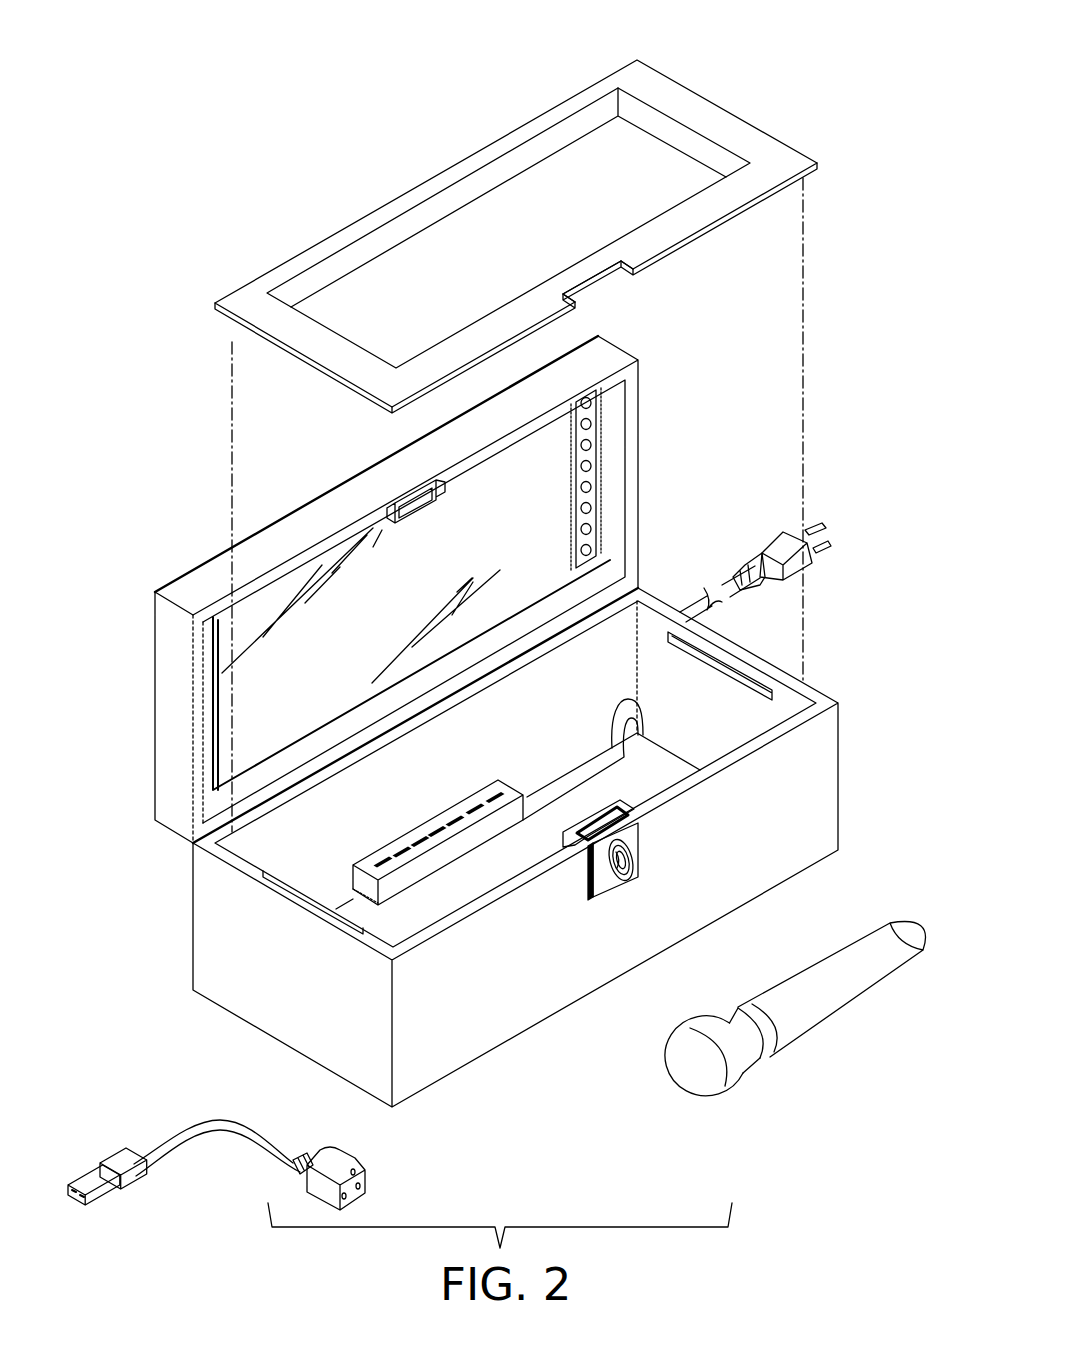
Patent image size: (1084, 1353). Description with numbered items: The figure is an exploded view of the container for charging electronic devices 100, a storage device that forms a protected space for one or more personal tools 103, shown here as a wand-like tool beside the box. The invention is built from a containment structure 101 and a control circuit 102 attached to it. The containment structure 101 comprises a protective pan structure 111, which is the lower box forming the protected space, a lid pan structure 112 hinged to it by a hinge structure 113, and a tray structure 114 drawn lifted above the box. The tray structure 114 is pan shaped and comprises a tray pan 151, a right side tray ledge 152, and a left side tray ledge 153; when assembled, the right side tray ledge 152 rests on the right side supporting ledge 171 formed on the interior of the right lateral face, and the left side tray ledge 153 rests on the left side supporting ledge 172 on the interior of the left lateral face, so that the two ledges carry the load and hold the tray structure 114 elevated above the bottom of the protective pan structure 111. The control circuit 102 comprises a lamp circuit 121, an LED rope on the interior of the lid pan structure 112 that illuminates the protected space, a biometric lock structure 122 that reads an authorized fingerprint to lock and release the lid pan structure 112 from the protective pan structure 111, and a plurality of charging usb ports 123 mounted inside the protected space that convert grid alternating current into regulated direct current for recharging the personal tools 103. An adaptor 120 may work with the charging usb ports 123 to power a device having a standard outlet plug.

The container for charging electronic devices 100 is at (196, 66).
The containment structure 101 is at (155, 110).
The control circuit 102 is at (930, 12).
The personal tool 103 is at (833, 1000).
The protective pan structure 111 is at (275, 1013).
The lid pan structure 112 is at (155, 704).
The hinge structure 113 is at (290, 350).
The tray structure 114 is at (557, 35).
The adaptor 120 is at (367, 1156).
The lamp circuit 121 is at (590, 463).
The biometric lock structure 122 is at (640, 847).
The plurality of charging usb ports 123 is at (510, 803).
The tray pan 151 is at (443, 257).
The right side tray ledge 152 is at (308, 345).
The left side tray ledge 153 is at (727, 110).
The right side supporting ledge 171 is at (313, 893).
The left side supporting ledge 172 is at (735, 668).